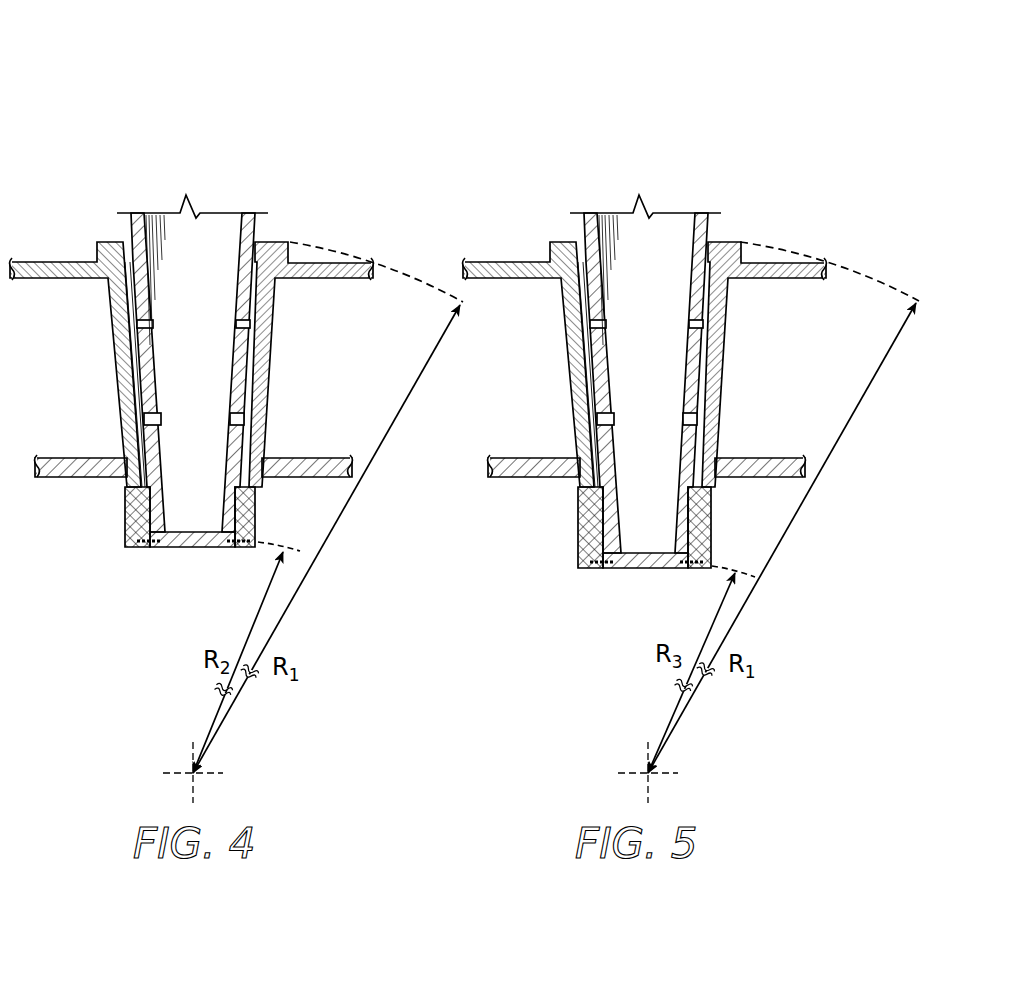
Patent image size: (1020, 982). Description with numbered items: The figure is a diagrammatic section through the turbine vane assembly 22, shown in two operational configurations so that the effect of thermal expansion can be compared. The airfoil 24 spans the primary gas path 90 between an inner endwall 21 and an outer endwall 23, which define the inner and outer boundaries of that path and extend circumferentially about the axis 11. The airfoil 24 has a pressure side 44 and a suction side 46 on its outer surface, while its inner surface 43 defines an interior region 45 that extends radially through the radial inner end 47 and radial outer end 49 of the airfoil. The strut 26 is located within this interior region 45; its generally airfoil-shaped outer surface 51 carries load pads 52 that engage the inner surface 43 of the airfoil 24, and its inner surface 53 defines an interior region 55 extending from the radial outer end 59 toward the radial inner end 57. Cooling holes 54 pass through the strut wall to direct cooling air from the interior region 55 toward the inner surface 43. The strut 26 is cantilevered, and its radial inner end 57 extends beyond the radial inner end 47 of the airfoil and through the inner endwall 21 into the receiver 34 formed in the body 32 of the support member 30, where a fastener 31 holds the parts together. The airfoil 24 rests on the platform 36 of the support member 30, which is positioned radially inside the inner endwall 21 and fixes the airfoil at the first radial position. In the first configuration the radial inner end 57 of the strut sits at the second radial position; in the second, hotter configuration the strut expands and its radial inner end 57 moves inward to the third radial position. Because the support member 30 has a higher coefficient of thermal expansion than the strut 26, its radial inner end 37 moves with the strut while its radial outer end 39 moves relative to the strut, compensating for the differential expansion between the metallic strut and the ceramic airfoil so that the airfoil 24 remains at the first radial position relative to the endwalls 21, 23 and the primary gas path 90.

In FIG. 4, the axis 11 is at (193, 773).
In FIG. 5, the axis 11 is at (626, 777).
In FIG. 4, the inner endwall 21 is at (52, 488).
In FIG. 5, the inner endwall 21 is at (526, 509).
In FIG. 4, the turbine vane assembly 22 is at (118, 142).
In FIG. 5, the turbine vane assembly 22 is at (521, 86).
In FIG. 4, the outer endwall 23 is at (40, 257).
In FIG. 5, the outer endwall 23 is at (527, 335).
In FIG. 4, the airfoil 24 is at (103, 338).
In FIG. 5, the airfoil 24 is at (492, 387).
In FIG. 4, the strut 26 is at (176, 233).
In FIG. 5, the strut 26 is at (645, 326).
In FIG. 4, the support member 30 is at (110, 522).
In FIG. 5, the support member 30 is at (542, 583).
In FIG. 4, the fastener 31 is at (236, 552).
In FIG. 5, the fastener 31 is at (680, 607).
In FIG. 4, the body 32 is at (262, 520).
In FIG. 5, the body 32 is at (784, 541).
In FIG. 4, the receiver 34 is at (160, 527).
In FIG. 5, the receiver 34 is at (637, 500).
In FIG. 4, the platform 36 is at (255, 500).
In FIG. 5, the platform 36 is at (733, 527).
In FIG. 4, the radial inner end 37 is at (145, 552).
In FIG. 5, the radial inner end 37 is at (641, 569).
In FIG. 4, the radial outer end 39 is at (116, 498).
In FIG. 5, the radial outer end 39 is at (536, 547).
In FIG. 4, the inner surface 43 is at (260, 392).
In FIG. 5, the inner surface 43 is at (708, 433).
In FIG. 4, the pressure side 44 is at (276, 345).
In FIG. 5, the pressure side 44 is at (761, 326).
In FIG. 4, the interior region 45 is at (260, 288).
In FIG. 5, the interior region 45 is at (764, 342).
In FIG. 4, the suction side 46 is at (110, 300).
In FIG. 5, the suction side 46 is at (529, 315).
In FIG. 4, the radial inner end 47 is at (258, 468).
In FIG. 5, the radial inner end 47 is at (758, 453).
In FIG. 4, the radial outer end 49 is at (272, 255).
In FIG. 5, the radial outer end 49 is at (776, 287).
In FIG. 4, the outer surface 51 is at (142, 440).
In FIG. 5, the outer surface 51 is at (560, 412).
In FIG. 4, the load pads 52 is at (125, 255).
In FIG. 5, the load pads 52 is at (554, 209).
In FIG. 4, the inner surface 53 is at (160, 442).
In FIG. 5, the inner surface 53 is at (628, 411).
In FIG. 4, the cooling holes 54 is at (233, 370).
In FIG. 5, the cooling holes 54 is at (643, 341).
In FIG. 4, the interior region 55 is at (210, 296).
In FIG. 5, the interior region 55 is at (650, 284).
In FIG. 4, the radial inner end 57 is at (192, 552).
In FIG. 5, the radial inner end 57 is at (645, 626).
In FIG. 4, the radial outer end 59 is at (258, 207).
In FIG. 5, the radial outer end 59 is at (752, 187).
In FIG. 4, the primary gas path 90 is at (310, 391).
In FIG. 5, the primary gas path 90 is at (750, 379).